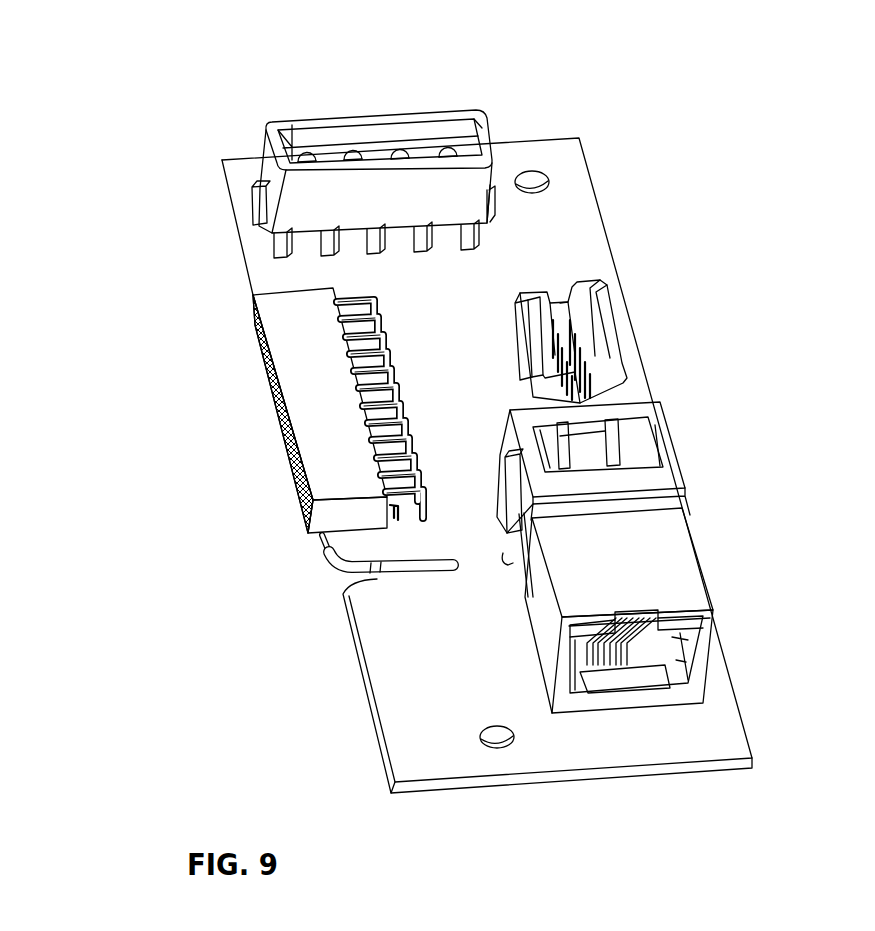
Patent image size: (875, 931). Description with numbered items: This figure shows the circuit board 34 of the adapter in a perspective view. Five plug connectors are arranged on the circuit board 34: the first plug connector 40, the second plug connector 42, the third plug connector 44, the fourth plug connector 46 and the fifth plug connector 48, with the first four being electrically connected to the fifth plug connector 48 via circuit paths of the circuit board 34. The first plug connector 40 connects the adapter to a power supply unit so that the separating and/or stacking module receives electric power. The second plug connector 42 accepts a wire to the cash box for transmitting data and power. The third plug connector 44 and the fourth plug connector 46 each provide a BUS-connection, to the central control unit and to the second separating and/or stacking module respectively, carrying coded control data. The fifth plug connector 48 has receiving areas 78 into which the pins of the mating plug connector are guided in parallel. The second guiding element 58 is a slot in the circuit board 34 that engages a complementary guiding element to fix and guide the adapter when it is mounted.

The circuit board 34 is at (656, 113).
The first plug connector 40 is at (307, 135).
The second plug connector 42 is at (604, 329).
The third plug connector 44 is at (623, 442).
The fourth plug connector 46 is at (645, 566).
The fifth plug connector 48 is at (318, 452).
The second guiding element 58 is at (353, 580).
The receiving areas 78 is at (273, 393).